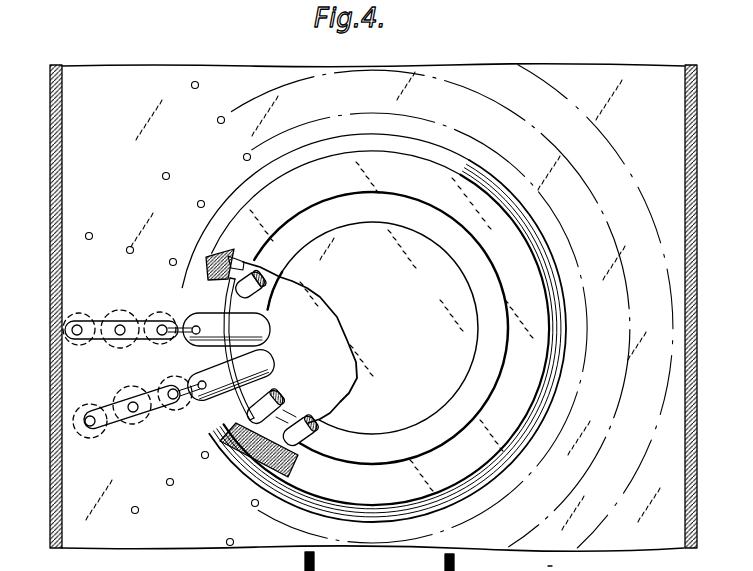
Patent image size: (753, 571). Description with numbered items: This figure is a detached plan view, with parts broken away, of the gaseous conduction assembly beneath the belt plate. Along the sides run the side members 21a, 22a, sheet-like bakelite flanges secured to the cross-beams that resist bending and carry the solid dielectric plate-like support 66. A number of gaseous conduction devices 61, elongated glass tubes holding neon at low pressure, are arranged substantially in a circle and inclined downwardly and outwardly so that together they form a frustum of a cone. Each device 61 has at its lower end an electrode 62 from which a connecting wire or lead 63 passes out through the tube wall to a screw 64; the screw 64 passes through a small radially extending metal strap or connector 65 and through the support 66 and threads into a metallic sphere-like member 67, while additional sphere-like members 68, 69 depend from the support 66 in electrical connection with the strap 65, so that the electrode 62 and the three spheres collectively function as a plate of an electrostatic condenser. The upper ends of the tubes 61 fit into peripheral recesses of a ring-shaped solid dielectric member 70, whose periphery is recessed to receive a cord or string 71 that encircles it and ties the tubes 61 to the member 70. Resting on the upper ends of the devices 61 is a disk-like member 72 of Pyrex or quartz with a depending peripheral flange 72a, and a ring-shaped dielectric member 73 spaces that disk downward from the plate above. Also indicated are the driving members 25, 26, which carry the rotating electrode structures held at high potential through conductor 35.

The side member 21a is at (62, 163).
The side member 22a is at (685, 128).
The solid dielectric plate-like support 66 is at (475, 72).
The disk-like member 72 is at (464, 468).
The ring-shaped member 73 is at (472, 401).
The depending peripheral flange 72a is at (245, 462).
The cord or string 71 is at (222, 437).
The ring-shaped solid dielectric member 70 is at (270, 327).
The gaseous conduction device 61 is at (266, 363).
The electrode 62 is at (196, 335).
The connecting wire or lead 63 is at (172, 321).
The screw 64 is at (184, 404).
The metal strap or connector 65 is at (103, 316).
The sphere-like member 67 is at (160, 347).
The sphere-like member 68 is at (116, 349).
The sphere-like member 69 is at (78, 312).
The driving member 25 is at (314, 564).
The driving member 26 is at (454, 564).
The conductor 35 is at (551, 570).